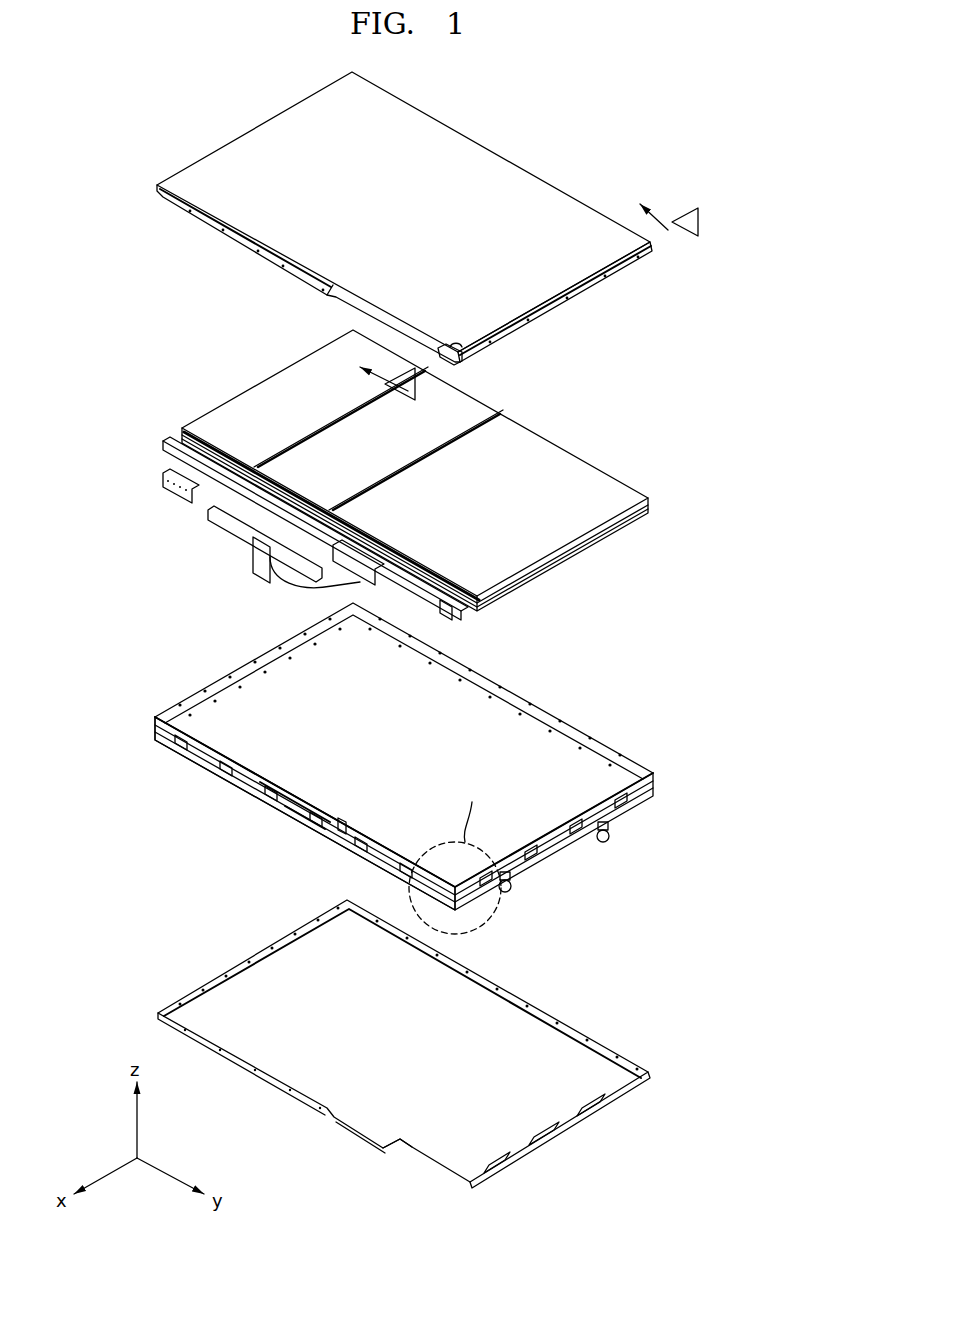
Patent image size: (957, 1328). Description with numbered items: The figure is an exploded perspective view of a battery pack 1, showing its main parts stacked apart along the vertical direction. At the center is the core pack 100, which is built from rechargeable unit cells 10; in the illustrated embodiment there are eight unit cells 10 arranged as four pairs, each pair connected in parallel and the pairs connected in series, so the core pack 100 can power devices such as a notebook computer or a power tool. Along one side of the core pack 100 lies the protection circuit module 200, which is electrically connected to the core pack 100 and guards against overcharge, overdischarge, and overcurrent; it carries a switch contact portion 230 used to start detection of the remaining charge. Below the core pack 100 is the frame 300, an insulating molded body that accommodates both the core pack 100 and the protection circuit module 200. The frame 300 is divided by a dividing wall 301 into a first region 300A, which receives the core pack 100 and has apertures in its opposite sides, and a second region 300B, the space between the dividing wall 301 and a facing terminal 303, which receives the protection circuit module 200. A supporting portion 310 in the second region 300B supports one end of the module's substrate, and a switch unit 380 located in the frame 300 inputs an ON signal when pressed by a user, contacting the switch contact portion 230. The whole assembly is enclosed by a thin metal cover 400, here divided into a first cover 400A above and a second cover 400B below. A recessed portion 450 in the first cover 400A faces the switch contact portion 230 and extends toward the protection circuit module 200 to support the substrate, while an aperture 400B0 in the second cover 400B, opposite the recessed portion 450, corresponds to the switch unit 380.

The battery pack 1 is at (549, 146).
The unit cell 10 is at (268, 392).
The core pack 100 is at (200, 416).
The protection circuit module 200 is at (160, 446).
The switch contact portion 230 is at (462, 618).
The frame 300 is at (232, 582).
The first region 300A is at (335, 697).
The second region 300B is at (176, 722).
The dividing wall 301 is at (310, 798).
The terminal 303 is at (295, 800).
The supporting portion 310 is at (345, 820).
The switch unit 380 is at (445, 908).
The cover 400 is at (754, 312).
The first cover 400A is at (565, 262).
The second cover 400B is at (565, 1062).
The aperture 400B0 is at (410, 1153).
The recessed portion 450 is at (470, 349).